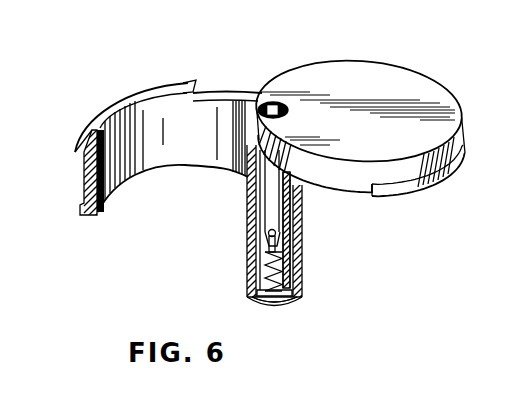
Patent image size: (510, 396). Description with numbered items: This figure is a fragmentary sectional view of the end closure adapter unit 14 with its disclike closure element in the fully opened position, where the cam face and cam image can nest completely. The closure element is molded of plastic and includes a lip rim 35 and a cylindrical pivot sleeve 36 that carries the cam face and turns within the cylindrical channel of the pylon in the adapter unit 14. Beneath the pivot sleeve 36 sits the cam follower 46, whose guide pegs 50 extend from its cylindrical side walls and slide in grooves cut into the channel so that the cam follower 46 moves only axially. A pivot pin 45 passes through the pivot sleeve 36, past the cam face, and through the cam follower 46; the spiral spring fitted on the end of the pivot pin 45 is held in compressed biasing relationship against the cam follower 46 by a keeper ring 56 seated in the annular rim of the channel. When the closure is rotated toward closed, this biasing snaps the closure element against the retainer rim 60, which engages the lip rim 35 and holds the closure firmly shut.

The end closure adapter unit 14 is at (84, 176).
The retainer rim 60 is at (122, 100).
The pivot sleeve 36 is at (368, 78).
The lip rim 35 is at (410, 184).
The guide pegs 50 is at (262, 246).
The cam follower 46 is at (292, 240).
The pivot pin 45 is at (290, 273).
The keeper ring 56 is at (280, 307).